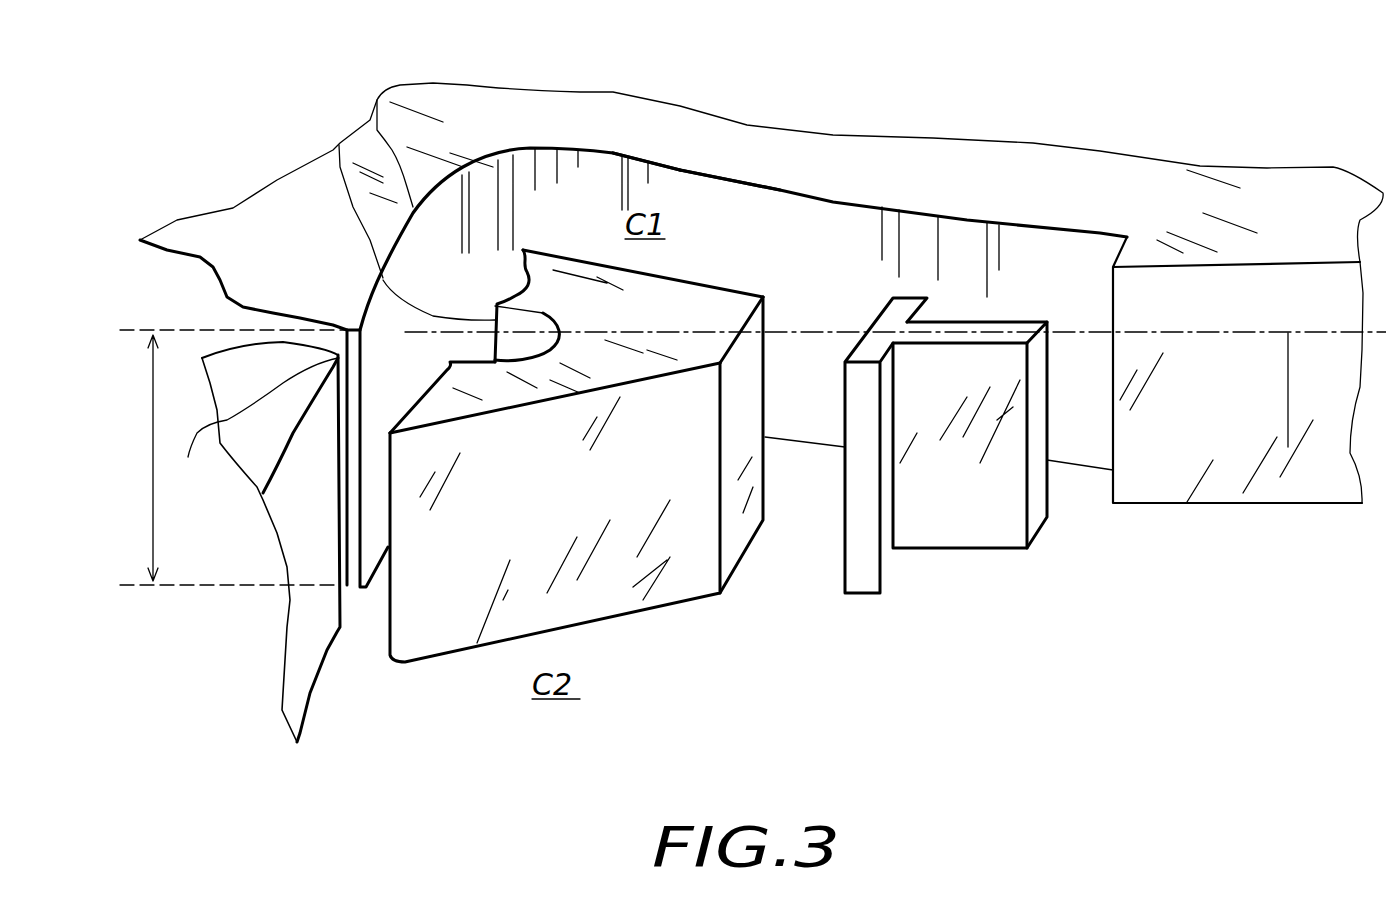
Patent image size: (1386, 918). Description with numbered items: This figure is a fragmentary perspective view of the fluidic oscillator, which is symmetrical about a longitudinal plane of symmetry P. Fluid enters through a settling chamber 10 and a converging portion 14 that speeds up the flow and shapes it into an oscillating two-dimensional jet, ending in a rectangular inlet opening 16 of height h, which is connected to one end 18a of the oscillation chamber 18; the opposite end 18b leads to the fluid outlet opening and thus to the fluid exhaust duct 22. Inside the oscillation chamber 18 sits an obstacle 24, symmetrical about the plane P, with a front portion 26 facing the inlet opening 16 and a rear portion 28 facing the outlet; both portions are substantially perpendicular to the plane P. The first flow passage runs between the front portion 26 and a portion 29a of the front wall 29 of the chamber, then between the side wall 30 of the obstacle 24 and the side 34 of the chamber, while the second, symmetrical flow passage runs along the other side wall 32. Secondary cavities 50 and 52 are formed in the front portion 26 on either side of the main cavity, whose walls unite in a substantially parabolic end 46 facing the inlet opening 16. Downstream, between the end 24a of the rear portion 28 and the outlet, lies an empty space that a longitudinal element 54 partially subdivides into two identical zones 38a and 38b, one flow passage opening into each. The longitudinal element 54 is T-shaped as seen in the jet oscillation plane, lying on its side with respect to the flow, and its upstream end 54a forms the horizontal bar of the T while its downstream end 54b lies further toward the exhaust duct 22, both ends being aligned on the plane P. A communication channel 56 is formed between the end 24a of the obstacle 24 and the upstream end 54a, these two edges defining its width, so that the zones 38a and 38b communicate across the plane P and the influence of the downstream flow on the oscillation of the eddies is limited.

The settling chamber 10 is at (172, 240).
The converging portion 14 is at (218, 277).
The inlet opening 16 is at (347, 330).
The oscillation chamber 18 is at (610, 153).
The end of oscillation chamber 18a is at (244, 538).
The end of oscillation chamber 18b is at (1130, 240).
The fluid exhaust duct 22 is at (1273, 265).
The obstacle 24 is at (676, 321).
The end of rear portion of obstacle 24a is at (737, 520).
The front portion of obstacle 26 is at (339, 145).
The rear portion of obstacle 28 is at (740, 333).
The front wall of oscillation chamber 29 is at (480, 163).
The portion of front wall 29a is at (377, 100).
The side wall of obstacle 30 is at (668, 278).
The side wall of obstacle 32 is at (610, 602).
The side of oscillation chamber 34 is at (730, 177).
The zone of empty space 38a is at (1043, 270).
The zone of empty space 38b is at (937, 568).
The parabolic end 46 is at (547, 313).
The secondary cavity 50 is at (503, 281).
The secondary cavity 52 is at (411, 386).
The longitudinal element 54 is at (977, 507).
The upstream end of longitudinal element 54a is at (880, 320).
The downstream end of longitudinal element 54b is at (1037, 510).
The communication channel 56 is at (813, 357).
The longitudinal plane of symmetry P is at (1265, 333).